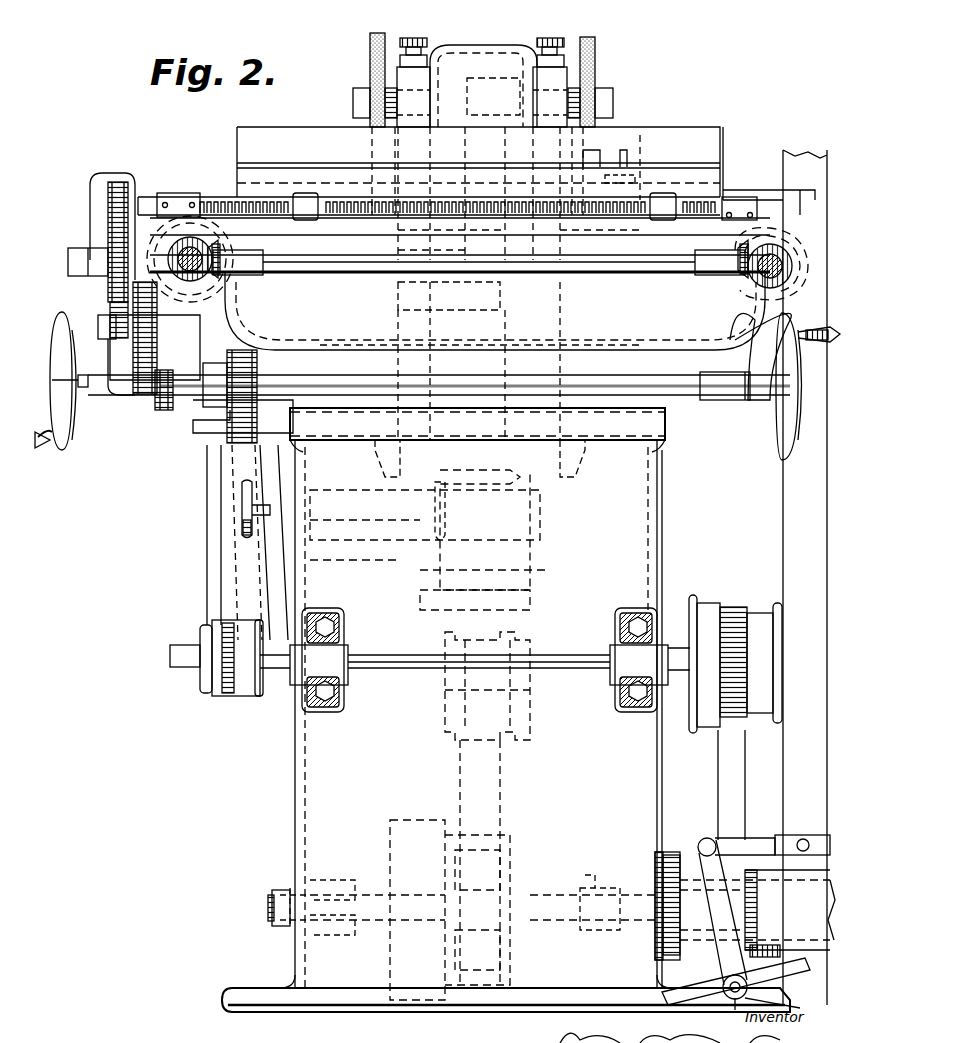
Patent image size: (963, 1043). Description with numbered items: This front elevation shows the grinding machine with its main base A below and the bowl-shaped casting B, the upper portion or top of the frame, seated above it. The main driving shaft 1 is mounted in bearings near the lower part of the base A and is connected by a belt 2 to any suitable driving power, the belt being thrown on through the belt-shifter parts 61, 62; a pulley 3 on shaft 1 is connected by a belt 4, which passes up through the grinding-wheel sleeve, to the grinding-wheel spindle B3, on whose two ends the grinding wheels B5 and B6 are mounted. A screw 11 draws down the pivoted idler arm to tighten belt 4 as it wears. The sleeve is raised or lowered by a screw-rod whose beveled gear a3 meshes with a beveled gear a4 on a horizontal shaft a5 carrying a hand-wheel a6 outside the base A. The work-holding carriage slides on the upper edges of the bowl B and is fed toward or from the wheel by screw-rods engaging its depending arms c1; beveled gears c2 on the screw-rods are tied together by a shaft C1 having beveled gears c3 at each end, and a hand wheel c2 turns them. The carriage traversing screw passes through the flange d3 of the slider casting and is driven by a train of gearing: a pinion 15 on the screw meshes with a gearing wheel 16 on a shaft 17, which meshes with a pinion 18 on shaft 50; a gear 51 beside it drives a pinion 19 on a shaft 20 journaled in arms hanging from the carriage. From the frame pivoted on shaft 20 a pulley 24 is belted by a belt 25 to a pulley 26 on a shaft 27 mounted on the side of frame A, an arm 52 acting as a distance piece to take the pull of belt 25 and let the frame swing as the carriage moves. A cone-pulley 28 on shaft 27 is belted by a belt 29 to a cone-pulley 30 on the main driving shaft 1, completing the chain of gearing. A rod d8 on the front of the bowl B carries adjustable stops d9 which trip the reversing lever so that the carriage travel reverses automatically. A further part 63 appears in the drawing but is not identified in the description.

The main driving shaft 1 is at (550, 905).
The belt 2 is at (800, 533).
The pulley 3 is at (510, 850).
The belt 4 is at (480, 862).
The screw 11 is at (500, 710).
The pinion 15 is at (130, 195).
The gearing wheel 16 is at (103, 238).
The shaft 17 is at (68, 262).
The pinion 18 is at (108, 318).
The pinion 19 is at (150, 385).
The shaft 20 is at (85, 396).
The pulley 24 is at (207, 430).
The belt 25 is at (205, 560).
The pulley 26 is at (225, 688).
The shaft 27 is at (684, 595).
The cone-pulley 28 is at (762, 625).
The belt 29 is at (711, 785).
The cone-pulley 30 is at (758, 872).
The shaft 50 is at (100, 318).
The gear 51 is at (136, 348).
The arm 52 is at (272, 597).
The belt-shifter 61 is at (727, 842).
The belt-shifter 62 is at (700, 862).
The treadle 63 is at (686, 995).
The main base A is at (476, 714).
The upper portion of frame B is at (476, 283).
The grinding-wheel spindle B3 is at (392, 105).
The grinding wheel B5 is at (371, 68).
The grinding wheel B6 is at (596, 70).
The shaft C1 is at (345, 268).
The depending arm c1 is at (167, 262).
The beveled gear c2 is at (800, 282).
The beveled gear c3 is at (735, 283).
The adjustable stop d9 is at (306, 193).
The rod d8 is at (628, 195).
The flange d3 is at (662, 205).
The beveled gear a3 is at (490, 470).
The beveled gear a4 is at (437, 537).
The horizontal shaft a5 is at (365, 515).
The hand-wheel a6 is at (245, 482).